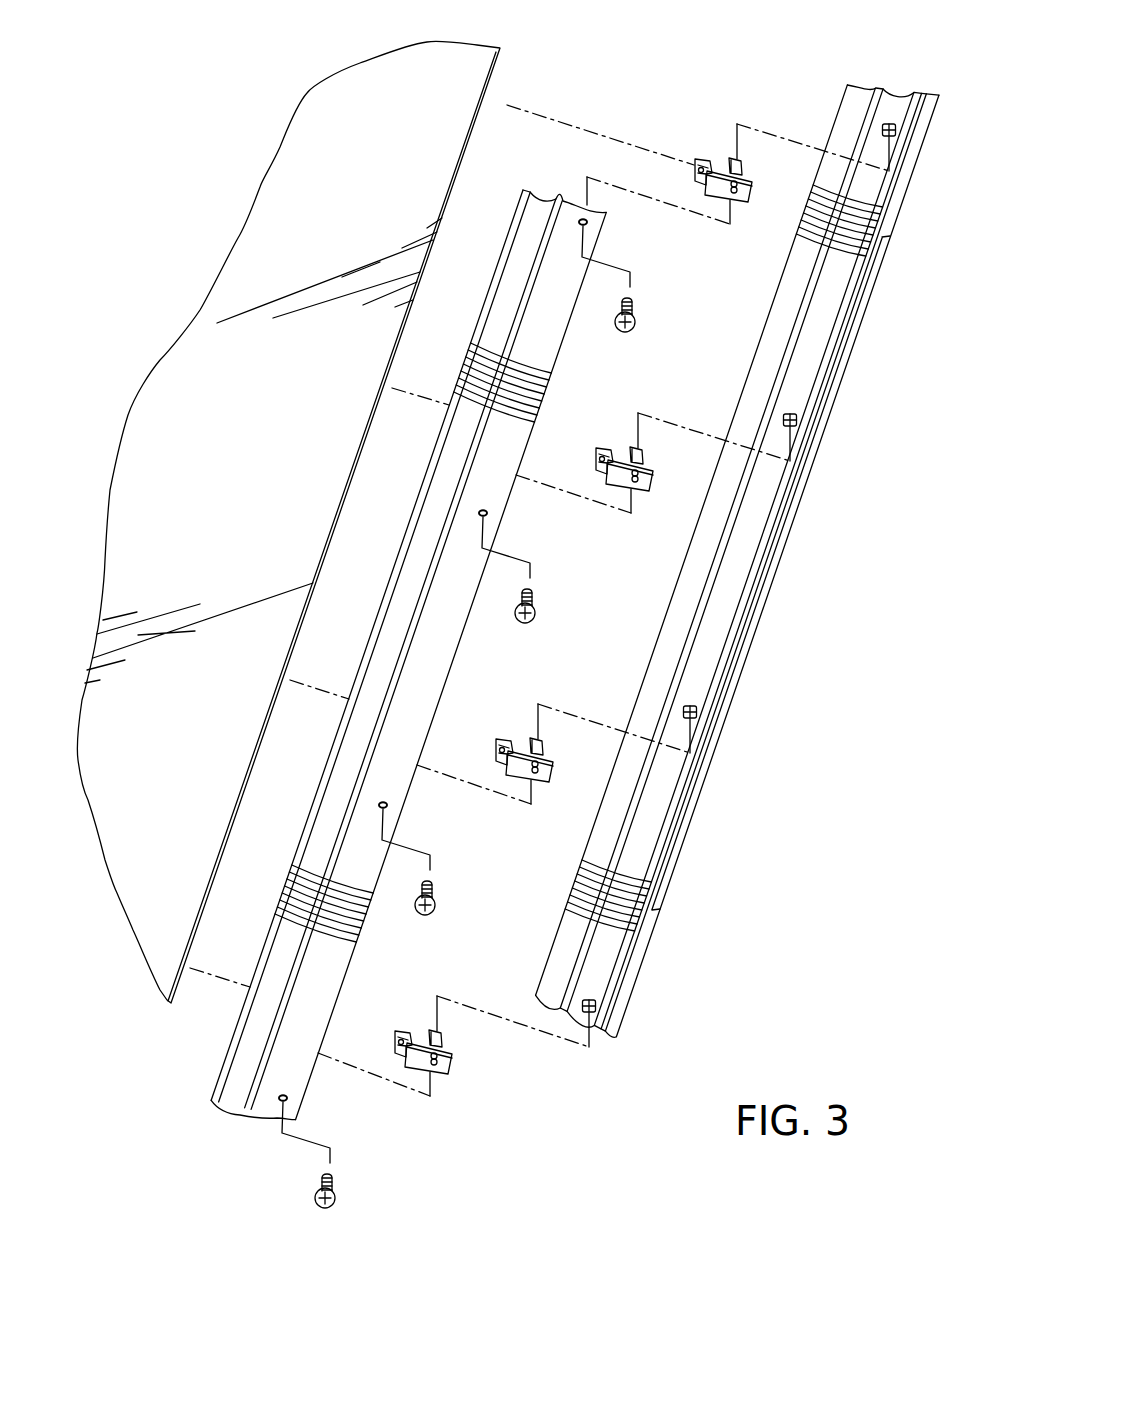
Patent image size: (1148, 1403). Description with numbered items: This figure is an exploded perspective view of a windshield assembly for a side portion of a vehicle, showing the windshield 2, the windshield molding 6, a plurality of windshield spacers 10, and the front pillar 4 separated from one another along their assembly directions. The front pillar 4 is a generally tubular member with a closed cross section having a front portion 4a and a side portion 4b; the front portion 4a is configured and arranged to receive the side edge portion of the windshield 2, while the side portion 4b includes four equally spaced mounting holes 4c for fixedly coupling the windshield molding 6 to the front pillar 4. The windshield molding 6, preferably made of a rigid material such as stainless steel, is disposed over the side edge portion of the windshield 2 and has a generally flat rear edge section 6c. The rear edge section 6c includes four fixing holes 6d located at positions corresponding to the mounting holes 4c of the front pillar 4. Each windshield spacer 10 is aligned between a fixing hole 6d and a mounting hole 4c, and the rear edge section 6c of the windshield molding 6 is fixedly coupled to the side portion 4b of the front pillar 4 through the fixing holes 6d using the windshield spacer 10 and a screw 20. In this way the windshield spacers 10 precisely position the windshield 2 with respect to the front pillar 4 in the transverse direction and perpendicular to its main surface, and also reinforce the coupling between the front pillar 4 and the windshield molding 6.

The windshield 2 is at (290, 233).
The front pillar 4 is at (737, 561).
The front portion 4a is at (681, 612).
The side portion 4b is at (705, 653).
The mounting holes 4c is at (784, 415).
The windshield molding 6 is at (416, 655).
The rear edge section 6c is at (423, 675).
The fixing holes 6d is at (487, 511).
The windshield spacer 10 is at (708, 160).
The screw 20 is at (636, 321).